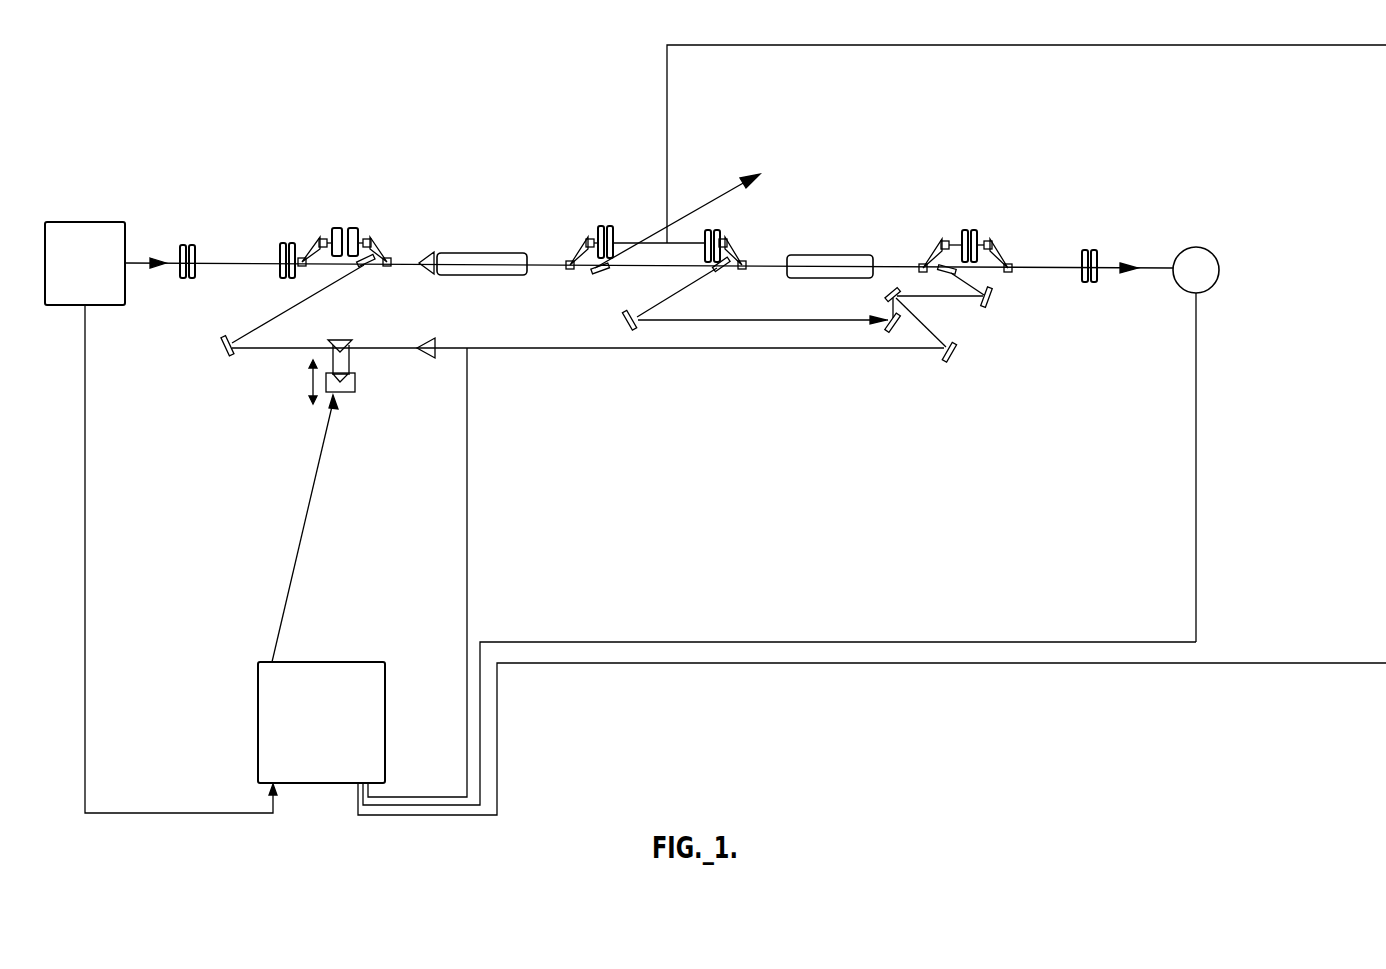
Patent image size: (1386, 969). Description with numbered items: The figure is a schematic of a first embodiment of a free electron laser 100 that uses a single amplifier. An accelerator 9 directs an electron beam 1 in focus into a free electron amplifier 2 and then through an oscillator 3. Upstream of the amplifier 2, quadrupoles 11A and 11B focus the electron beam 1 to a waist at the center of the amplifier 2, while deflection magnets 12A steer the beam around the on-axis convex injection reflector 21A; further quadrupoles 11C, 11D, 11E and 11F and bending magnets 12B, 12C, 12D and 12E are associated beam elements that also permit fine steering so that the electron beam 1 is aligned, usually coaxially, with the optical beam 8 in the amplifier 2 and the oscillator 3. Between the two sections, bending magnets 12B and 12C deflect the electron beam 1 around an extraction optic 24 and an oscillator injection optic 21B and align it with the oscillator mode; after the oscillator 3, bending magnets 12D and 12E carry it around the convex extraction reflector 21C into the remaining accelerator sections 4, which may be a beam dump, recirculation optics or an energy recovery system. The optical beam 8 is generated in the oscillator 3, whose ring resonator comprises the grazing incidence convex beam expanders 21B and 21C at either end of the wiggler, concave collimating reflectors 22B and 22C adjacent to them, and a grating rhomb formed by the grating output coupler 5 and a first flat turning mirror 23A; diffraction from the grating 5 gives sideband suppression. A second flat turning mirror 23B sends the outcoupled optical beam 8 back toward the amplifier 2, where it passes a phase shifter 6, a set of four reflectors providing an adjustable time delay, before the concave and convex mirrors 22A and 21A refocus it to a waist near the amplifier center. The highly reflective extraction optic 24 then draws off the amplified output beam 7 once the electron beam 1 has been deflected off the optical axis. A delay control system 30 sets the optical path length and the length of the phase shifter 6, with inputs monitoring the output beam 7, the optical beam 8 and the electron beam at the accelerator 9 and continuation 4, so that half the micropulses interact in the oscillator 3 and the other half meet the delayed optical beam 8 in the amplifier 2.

The free electron laser 100 is at (320, 114).
The electron beam 1 is at (235, 263).
The accelerator 9 is at (101, 222).
The quadrupole 11A is at (186, 248).
The quadrupole 11B is at (336, 228).
The quadrupole 11C is at (592, 227).
The quadrupole 11D is at (711, 231).
The quadrupole 11E is at (964, 230).
The quadrupole 11F is at (1090, 252).
The deflection magnet 12A is at (303, 258).
The bending magnet 12B is at (567, 260).
The bending magnet 12C is at (745, 262).
The bending magnet 12D is at (921, 262).
The bending magnet 12E is at (1009, 262).
The free electron amplifier 2 is at (478, 253).
The oscillator 3 is at (804, 254).
The remaining sections of the accelerator 4 is at (1212, 252).
The grating output coupler 5 is at (889, 296).
The phase shifter 6 is at (352, 358).
The output beam 7 is at (716, 200).
The optical beam 8 is at (423, 258).
The convex reflector 21A is at (366, 268).
The oscillator injection optic 21B is at (712, 270).
The convex extraction reflector 21C is at (942, 272).
The concave mirror 22A is at (218, 348).
The concave collimating reflector 22B is at (620, 311).
The concave collimating reflector 22C is at (992, 299).
The first flat turning mirror 23A is at (884, 320).
The second flat turning mirror 23B is at (954, 358).
The extraction optic 24 is at (594, 274).
The delay control system 30 is at (353, 662).